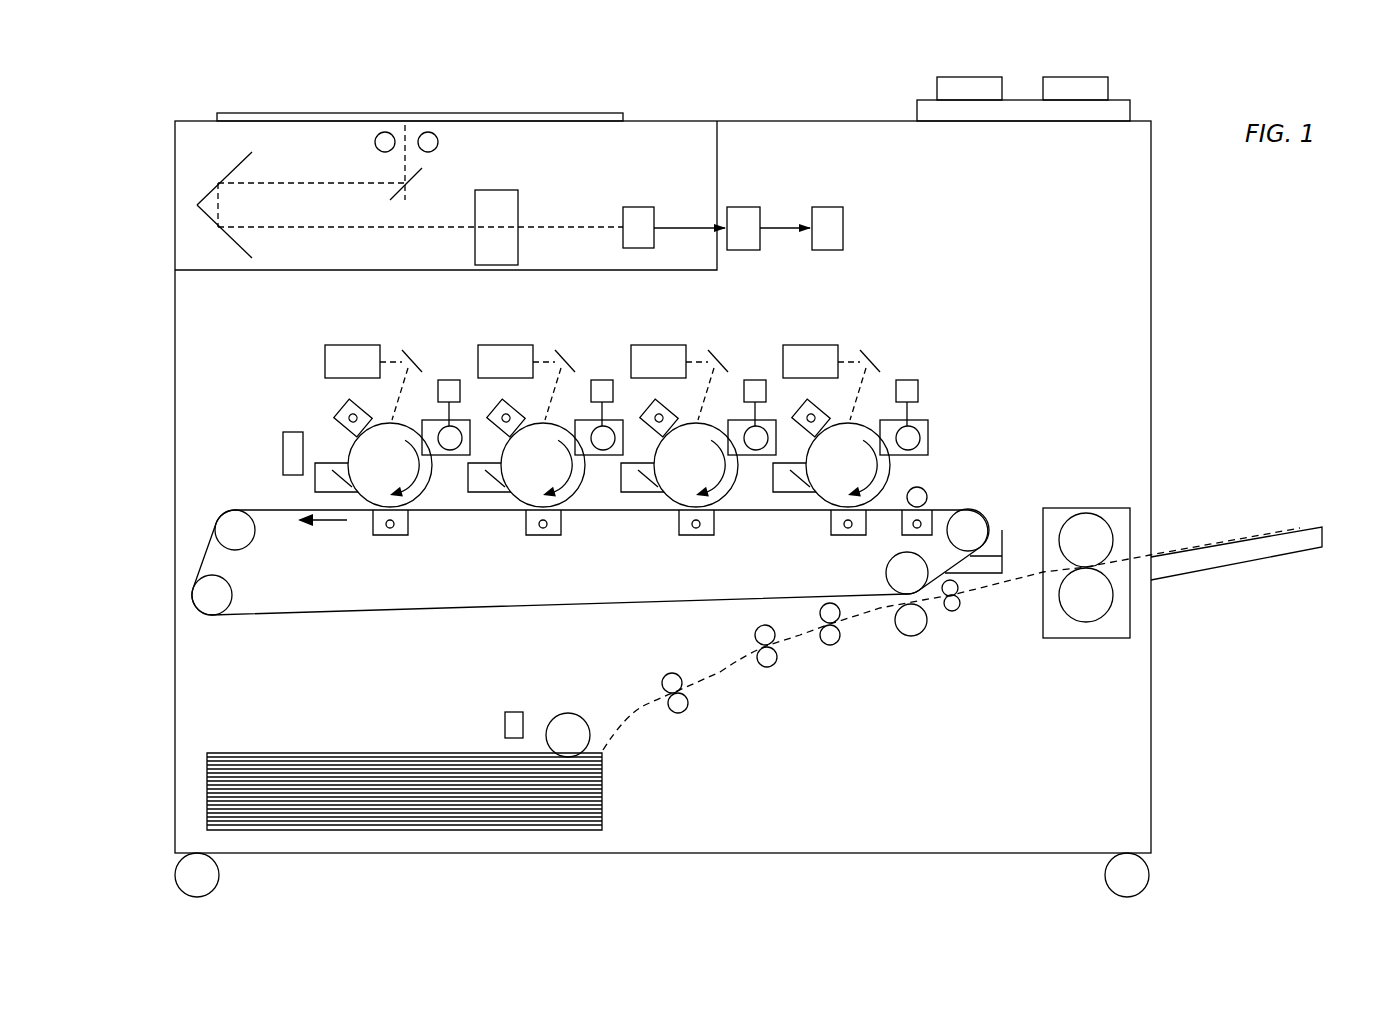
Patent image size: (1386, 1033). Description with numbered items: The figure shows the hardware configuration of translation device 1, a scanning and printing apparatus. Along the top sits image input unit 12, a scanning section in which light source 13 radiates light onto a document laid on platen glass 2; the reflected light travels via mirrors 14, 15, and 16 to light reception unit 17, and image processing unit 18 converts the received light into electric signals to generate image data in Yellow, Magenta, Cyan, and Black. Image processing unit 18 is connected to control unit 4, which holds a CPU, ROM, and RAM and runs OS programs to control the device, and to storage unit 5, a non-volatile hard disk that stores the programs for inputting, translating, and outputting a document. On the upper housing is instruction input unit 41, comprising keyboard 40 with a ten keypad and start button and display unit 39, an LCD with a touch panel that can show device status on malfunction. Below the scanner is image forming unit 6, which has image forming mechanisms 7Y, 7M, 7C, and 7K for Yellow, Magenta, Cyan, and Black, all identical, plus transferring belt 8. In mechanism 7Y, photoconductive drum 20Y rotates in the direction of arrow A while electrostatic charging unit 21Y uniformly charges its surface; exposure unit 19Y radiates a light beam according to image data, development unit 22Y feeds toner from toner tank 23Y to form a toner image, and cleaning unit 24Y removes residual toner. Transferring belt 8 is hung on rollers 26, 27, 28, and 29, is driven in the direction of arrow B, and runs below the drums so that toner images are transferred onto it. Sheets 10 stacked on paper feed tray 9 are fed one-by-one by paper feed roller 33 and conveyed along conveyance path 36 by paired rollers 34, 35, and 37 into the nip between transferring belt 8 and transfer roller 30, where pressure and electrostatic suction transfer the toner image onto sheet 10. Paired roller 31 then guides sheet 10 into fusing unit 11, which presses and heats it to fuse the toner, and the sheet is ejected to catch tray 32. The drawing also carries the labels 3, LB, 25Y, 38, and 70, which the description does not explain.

The translation device 1 is at (1156, 219).
The platen glass 2 is at (313, 113).
The image reading section 3 is at (590, 178).
The control unit 4 is at (740, 207).
The storage unit 5 is at (824, 207).
The image forming unit 6 is at (890, 254).
The image forming mechanism 7K is at (397, 350).
The image forming mechanism 7C is at (551, 350).
The image forming mechanism 7M is at (704, 352).
The image forming mechanism 7Y is at (864, 429).
The transferring belt 8 is at (366, 612).
The paper feed tray 9 is at (604, 800).
The sheets 10 is at (455, 753).
The fusing unit 11 is at (1082, 505).
The image input unit 12 is at (177, 121).
The light source 13 is at (426, 132).
The mirror 14 is at (422, 170).
The mirror 15 is at (233, 164).
The mirror 16 is at (230, 240).
The light reception unit 17 is at (506, 190).
The image processing unit 18 is at (647, 207).
The exposure unit 19Y is at (811, 347).
The laser beam LB is at (860, 354).
The photoconductive drum 20Y is at (862, 410).
The electrostatic charging unit 21Y is at (808, 412).
The development unit 22Y is at (928, 440).
The toner tank 23Y is at (918, 393).
The cleaning unit 24Y is at (774, 477).
The primary transfer roller 25Y is at (834, 533).
The roller 26 is at (983, 514).
The roller 27 is at (250, 540).
The roller 28 is at (232, 594).
The roller 29 is at (887, 584).
The transfer roller 30 is at (922, 632).
The paired roller 31 is at (959, 613).
The catch tray 32 is at (1275, 550).
The paper feed roller 33 is at (566, 713).
The paired rollers 34 is at (690, 713).
The paired rollers 35 is at (781, 666).
The conveyance path 36 is at (640, 716).
The paired rollers 37 is at (835, 650).
The belt cleaner 38 is at (1003, 556).
The display unit 39 is at (972, 77).
The keyboard 40 is at (1082, 80).
The instruction input unit 41 is at (1020, 77).
The sensor 70 is at (513, 712).
The arrow A is at (889, 468).
The arrow B is at (330, 522).